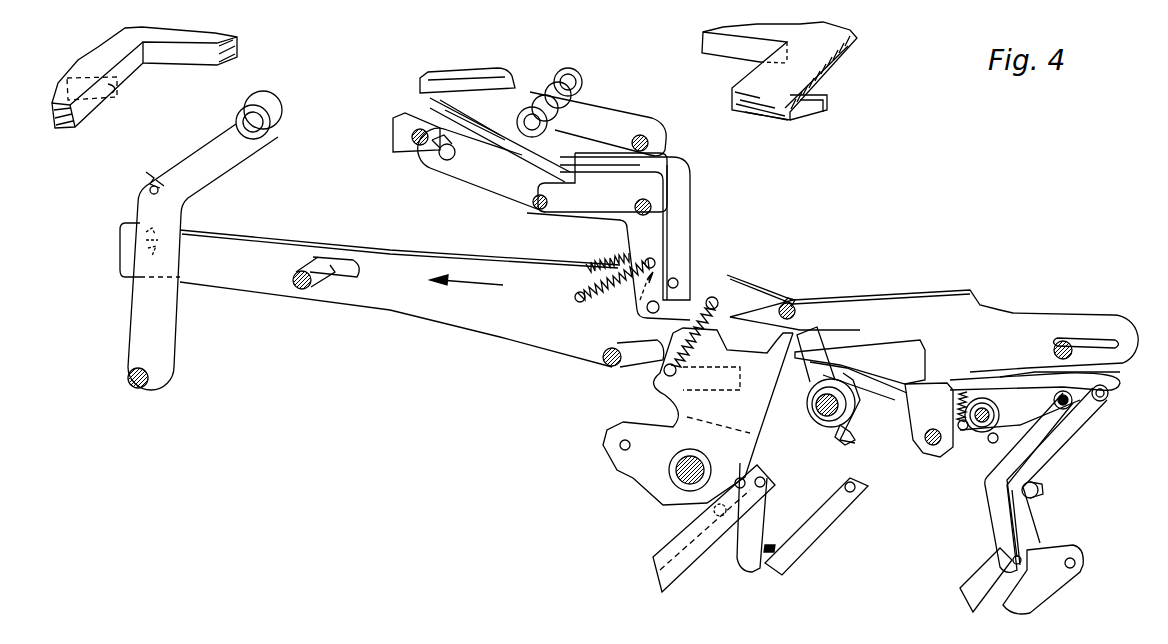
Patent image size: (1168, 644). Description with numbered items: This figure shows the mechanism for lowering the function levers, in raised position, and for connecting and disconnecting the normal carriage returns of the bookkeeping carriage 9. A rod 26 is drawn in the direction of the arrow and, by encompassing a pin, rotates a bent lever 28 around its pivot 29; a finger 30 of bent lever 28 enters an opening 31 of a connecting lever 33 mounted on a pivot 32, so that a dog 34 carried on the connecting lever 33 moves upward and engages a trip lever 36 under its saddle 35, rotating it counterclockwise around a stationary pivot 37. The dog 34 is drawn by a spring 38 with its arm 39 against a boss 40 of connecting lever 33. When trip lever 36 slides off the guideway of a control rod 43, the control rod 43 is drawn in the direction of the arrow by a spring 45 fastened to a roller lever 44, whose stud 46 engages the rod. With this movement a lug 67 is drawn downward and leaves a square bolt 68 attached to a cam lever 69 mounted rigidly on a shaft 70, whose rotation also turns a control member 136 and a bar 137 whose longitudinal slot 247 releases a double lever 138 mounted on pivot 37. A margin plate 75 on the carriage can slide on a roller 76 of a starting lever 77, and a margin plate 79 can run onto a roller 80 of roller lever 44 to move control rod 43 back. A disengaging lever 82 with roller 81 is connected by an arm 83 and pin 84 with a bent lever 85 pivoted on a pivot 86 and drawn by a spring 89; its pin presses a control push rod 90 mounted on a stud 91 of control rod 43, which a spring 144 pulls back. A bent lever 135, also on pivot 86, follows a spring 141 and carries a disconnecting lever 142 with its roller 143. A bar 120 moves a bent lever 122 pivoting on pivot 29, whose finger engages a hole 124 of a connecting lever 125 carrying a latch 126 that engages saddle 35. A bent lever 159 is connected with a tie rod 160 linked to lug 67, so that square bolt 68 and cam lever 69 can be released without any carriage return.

The bookkeeping carriage 9 is at (489, 75).
The margin plate 79 is at (108, 97).
The roller 80 is at (277, 108).
The roller lever 44 is at (208, 240).
The spring 45 is at (143, 177).
The stud 46 is at (133, 227).
The control rod 43 is at (370, 290).
The disconnecting lever 142 is at (440, 93).
The disengaging lever 82 is at (487, 127).
The roller 81 is at (533, 113).
The roller 143 is at (550, 70).
The roller 76 is at (573, 77).
The starting lever 77 is at (593, 103).
The bent lever 85 is at (593, 197).
The pivot 86 is at (637, 197).
The arm 83 is at (473, 170).
The pin 84 is at (540, 213).
The bent lever 135 is at (677, 207).
The spring 141 is at (613, 258).
The spring 89 is at (613, 287).
The spring 144 is at (697, 297).
The square bolt 68 is at (732, 297).
The control push rod 90 is at (753, 297).
The stud 91 is at (790, 297).
The trip lever 36 is at (807, 350).
The pivot 37 is at (833, 350).
The saddle 35 is at (900, 347).
The dog 34 is at (927, 380).
The latch 126 is at (950, 373).
The boss 40 is at (997, 350).
The connecting lever 33 is at (1027, 400).
The connecting lever 125 is at (1037, 377).
The opening 31 is at (1067, 393).
The hole 124 is at (1106, 398).
The spring 38 is at (968, 428).
The pivot 32 is at (993, 440).
The arm 39 is at (1007, 447).
The bent lever 28 is at (1040, 430).
The finger 30 is at (1080, 427).
The bent lever 122 is at (1063, 450).
The pivot 29 is at (1043, 490).
The bar 120 is at (1053, 580).
The rod 26 is at (983, 595).
The margin plate 75 is at (833, 103).
The cam lever 69 is at (681, 427).
The shaft 70 is at (670, 473).
The lug 67 is at (667, 388).
The control member 136 is at (627, 458).
The bar 137 is at (773, 480).
The bent lever 159 is at (760, 560).
The tie rod 160 is at (807, 487).
The double lever 138 is at (880, 420).
The longitudinal slot 247 is at (843, 437).